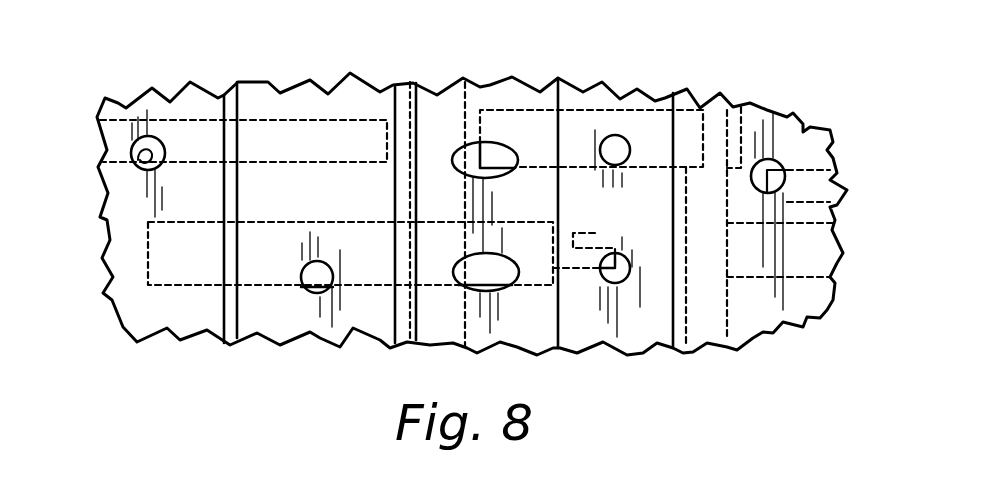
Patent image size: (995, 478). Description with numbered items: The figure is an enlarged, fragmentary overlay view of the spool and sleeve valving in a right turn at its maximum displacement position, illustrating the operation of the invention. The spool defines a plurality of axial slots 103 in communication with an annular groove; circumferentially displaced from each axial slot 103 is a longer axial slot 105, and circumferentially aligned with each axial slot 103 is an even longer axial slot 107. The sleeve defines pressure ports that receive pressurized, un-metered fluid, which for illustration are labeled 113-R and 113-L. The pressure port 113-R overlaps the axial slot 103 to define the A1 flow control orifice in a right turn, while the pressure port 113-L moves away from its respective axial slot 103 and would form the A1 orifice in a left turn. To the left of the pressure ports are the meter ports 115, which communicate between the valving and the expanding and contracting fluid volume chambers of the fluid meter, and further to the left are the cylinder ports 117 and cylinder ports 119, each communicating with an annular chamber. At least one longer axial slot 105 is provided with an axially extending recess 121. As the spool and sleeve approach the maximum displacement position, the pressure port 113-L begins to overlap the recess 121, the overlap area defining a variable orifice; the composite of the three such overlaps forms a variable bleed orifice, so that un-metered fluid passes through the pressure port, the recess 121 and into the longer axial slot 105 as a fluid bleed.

The axial slot 103 is at (578, 123).
The longer axial slot 105 is at (370, 222).
The even longer axial slot 107 is at (331, 125).
The pressure port 113-R is at (603, 140).
The pressure port 113-L is at (615, 270).
The meter port 115 is at (492, 145).
The cylinder port 117 is at (318, 265).
The cylinder port 119 is at (140, 168).
The axially extending recess 121 is at (595, 233).